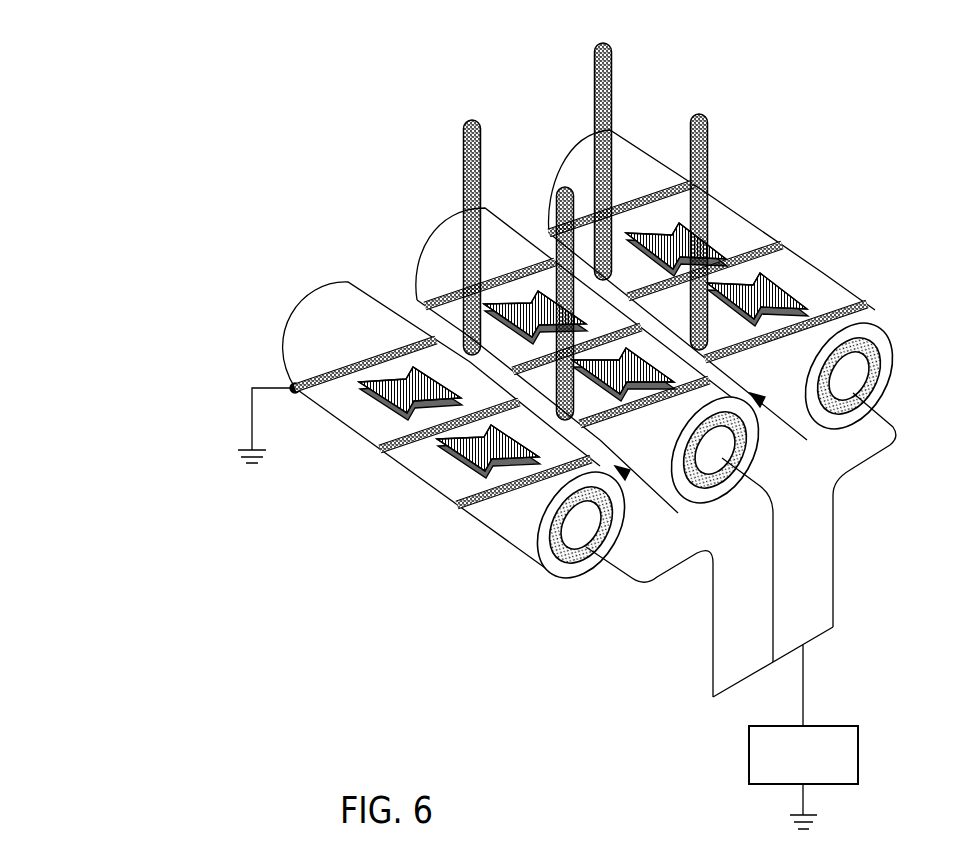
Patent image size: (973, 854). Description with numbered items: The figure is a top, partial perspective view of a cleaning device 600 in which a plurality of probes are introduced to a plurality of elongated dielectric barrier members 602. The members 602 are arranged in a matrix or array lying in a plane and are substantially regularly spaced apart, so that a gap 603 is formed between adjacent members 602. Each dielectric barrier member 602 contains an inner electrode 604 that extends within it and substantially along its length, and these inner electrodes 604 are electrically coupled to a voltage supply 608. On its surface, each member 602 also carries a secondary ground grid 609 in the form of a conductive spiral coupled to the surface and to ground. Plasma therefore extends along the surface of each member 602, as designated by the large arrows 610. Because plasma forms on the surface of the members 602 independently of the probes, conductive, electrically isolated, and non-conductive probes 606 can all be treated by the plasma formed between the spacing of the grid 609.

The cleaning device 600 is at (66, 63).
The elongated dielectric barrier member 602 is at (300, 316).
The gap 603 is at (722, 459).
The inner electrode 604 is at (853, 352).
The probe 606 is at (598, 44).
The voltage supply 608 is at (858, 752).
The secondary ground grid 609 is at (780, 248).
The large arrows 610 is at (425, 380).